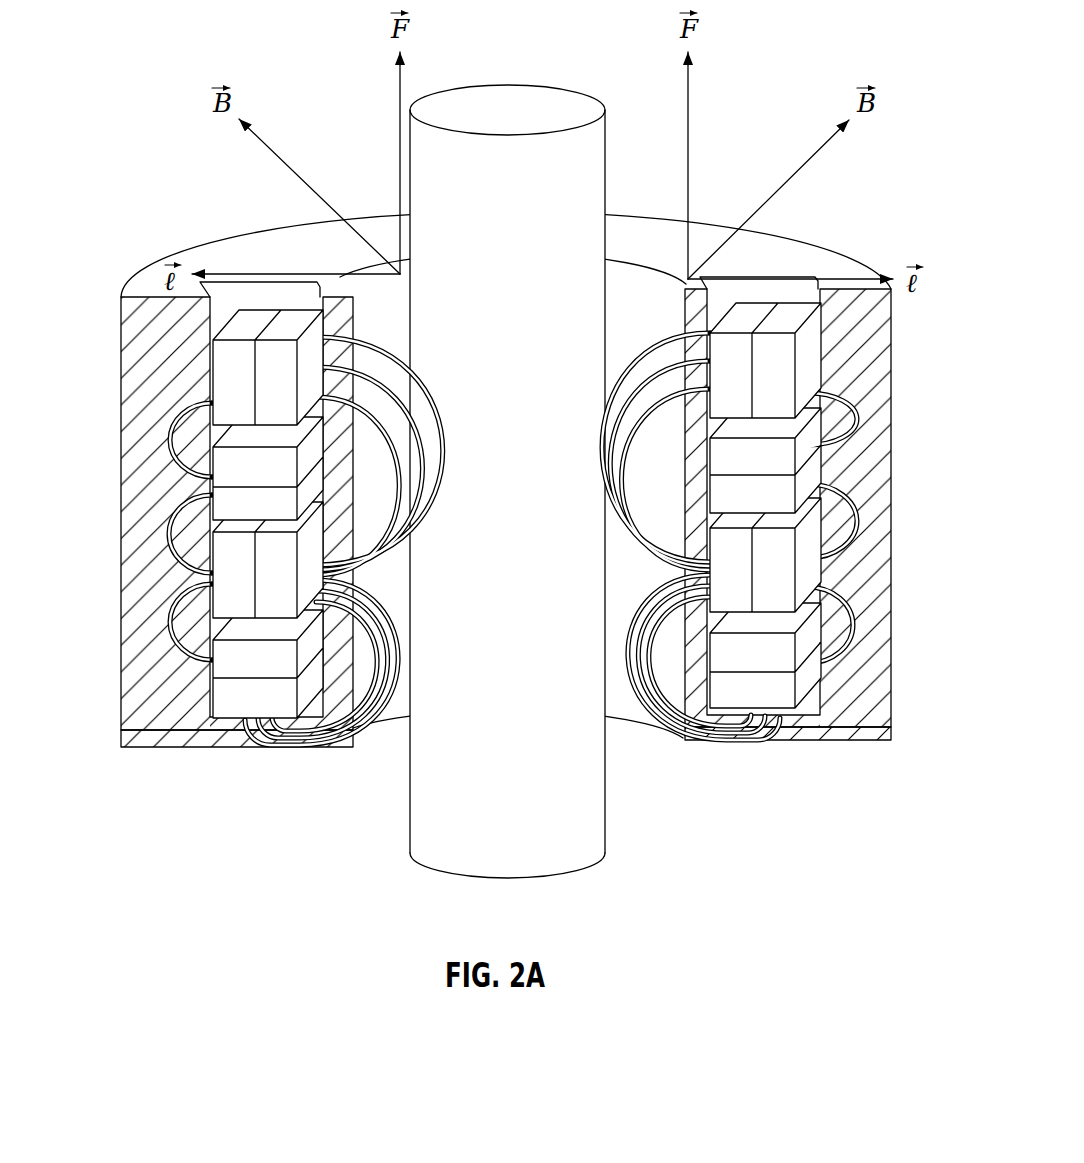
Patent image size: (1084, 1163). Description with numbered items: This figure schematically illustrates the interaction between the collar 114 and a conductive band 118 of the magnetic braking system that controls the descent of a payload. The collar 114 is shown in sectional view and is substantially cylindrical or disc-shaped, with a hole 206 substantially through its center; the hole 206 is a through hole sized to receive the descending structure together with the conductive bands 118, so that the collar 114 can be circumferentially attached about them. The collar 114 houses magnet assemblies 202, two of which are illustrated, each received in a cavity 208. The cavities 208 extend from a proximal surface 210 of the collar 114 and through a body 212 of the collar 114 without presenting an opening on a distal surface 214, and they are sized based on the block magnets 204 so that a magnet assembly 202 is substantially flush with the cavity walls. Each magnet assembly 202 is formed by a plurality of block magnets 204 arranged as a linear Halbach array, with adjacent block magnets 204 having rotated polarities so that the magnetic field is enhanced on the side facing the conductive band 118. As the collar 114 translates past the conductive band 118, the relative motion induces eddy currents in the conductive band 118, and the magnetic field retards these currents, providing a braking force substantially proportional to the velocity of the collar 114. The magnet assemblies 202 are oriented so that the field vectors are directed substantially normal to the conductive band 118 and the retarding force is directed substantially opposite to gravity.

The conductive band 118 is at (527, 103).
The collar 114 is at (631, 180).
The proximal surface 210 is at (710, 220).
The cavity 208 is at (240, 283).
The block magnet 204 is at (210, 353).
The magnet assembly 202 is at (194, 492).
The body 212 is at (890, 397).
The distal surface 214 is at (805, 742).
The hole 206 is at (648, 758).